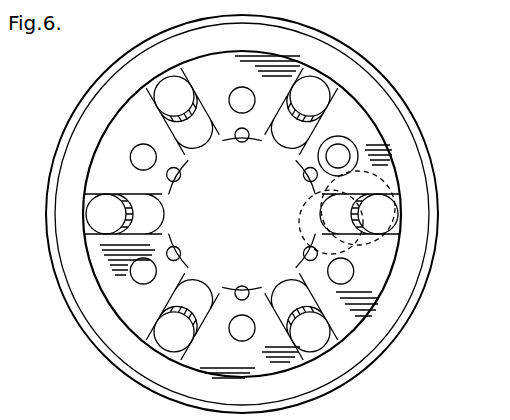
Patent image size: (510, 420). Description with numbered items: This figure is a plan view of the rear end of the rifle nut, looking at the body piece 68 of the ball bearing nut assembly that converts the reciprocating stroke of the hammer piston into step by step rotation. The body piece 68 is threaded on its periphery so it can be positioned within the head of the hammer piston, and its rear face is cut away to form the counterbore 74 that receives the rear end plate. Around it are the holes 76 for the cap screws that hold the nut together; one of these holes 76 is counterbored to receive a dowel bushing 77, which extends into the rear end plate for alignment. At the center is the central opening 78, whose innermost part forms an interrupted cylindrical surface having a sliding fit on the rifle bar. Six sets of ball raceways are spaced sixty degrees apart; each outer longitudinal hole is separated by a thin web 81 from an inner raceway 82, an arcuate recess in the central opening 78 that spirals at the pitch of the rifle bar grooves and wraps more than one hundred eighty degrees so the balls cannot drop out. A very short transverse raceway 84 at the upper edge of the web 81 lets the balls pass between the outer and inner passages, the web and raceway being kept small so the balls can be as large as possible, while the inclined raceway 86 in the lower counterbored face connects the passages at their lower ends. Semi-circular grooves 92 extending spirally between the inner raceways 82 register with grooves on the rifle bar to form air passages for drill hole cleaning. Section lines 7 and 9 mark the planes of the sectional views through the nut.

The section line 7- 7 is at (42, 131).
The section line 9- 9 is at (442, 125).
The body piece 68 is at (100, 317).
The counterbore 74 is at (380, 283).
The holes 76 is at (143, 145).
The dowel bushing 77 is at (339, 137).
The central opening 78 is at (258, 278).
The web 81 is at (200, 297).
The inner raceway 82 is at (208, 139).
The transverse raceway 84 is at (177, 300).
The inclined raceway 86 is at (352, 248).
The semi-circular grooves 92 is at (179, 175).